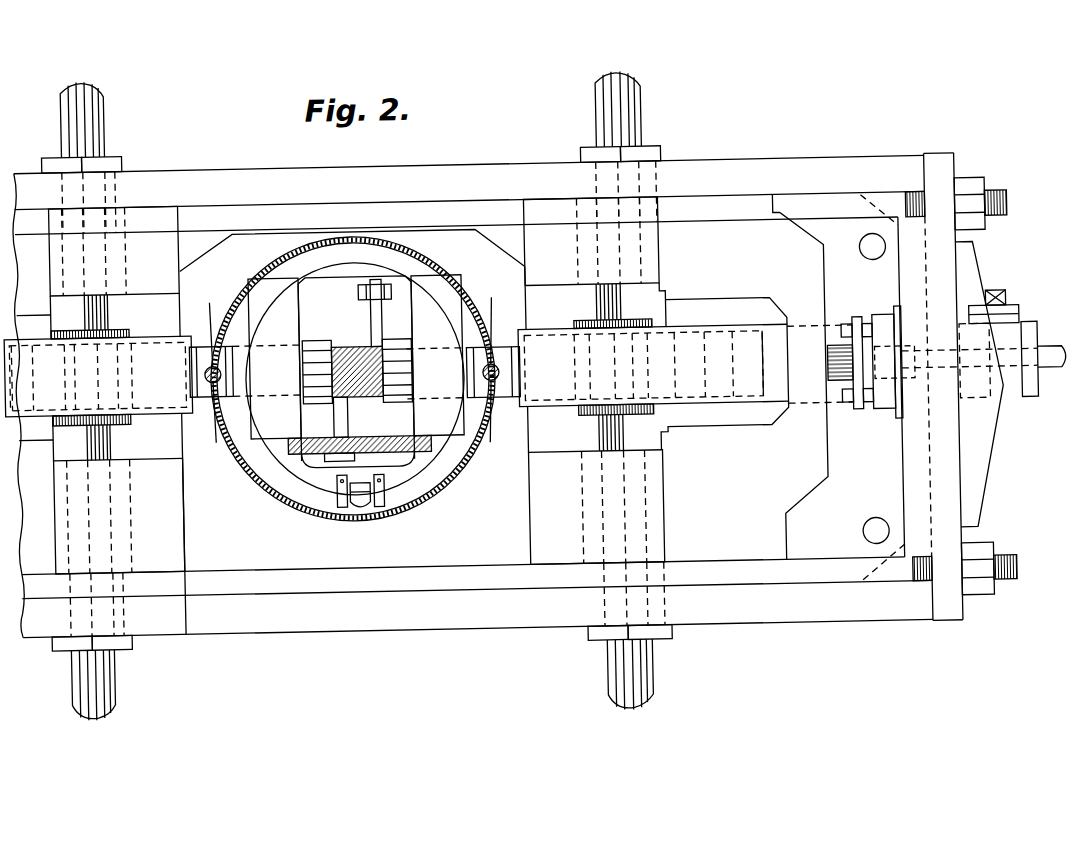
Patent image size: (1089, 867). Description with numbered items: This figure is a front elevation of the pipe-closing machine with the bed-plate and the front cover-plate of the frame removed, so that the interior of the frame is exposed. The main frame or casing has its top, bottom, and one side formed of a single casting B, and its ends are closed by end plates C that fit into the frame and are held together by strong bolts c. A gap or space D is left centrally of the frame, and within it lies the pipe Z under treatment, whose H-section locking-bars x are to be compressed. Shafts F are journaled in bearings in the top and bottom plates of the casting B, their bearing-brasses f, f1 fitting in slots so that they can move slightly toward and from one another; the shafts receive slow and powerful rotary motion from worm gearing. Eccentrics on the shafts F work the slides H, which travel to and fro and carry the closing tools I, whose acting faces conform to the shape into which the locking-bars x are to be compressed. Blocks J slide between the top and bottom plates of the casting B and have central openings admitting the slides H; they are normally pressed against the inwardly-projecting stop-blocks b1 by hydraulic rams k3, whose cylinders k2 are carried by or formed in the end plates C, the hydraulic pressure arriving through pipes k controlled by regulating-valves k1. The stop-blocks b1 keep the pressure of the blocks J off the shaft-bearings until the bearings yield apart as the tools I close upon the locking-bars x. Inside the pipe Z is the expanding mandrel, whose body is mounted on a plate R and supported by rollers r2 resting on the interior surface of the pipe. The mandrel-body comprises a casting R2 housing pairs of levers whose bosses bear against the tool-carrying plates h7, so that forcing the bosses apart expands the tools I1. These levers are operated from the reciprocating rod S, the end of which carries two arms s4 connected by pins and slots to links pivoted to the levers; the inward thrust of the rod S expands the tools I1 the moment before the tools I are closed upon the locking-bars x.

The casting B is at (791, 186).
The bolts c is at (1012, 609).
The end plates C is at (949, 184).
The shafts F is at (107, 123).
The bearing-brass f is at (63, 160).
The bearing-brass f1 is at (116, 161).
The stop-blocks b1 is at (357, 385).
The blocks J is at (461, 415).
The slides H is at (428, 371).
The gap or space D is at (352, 260).
The pipe Z is at (274, 498).
The casting R2 is at (356, 357).
The reciprocating rod S is at (350, 355).
The arms s4 is at (380, 318).
The plate R is at (430, 450).
The rollers r2 is at (361, 512).
The closing tools I is at (203, 352).
The tools I1 is at (483, 390).
The tool-carrying plates h7 is at (243, 392).
The locking-bars x is at (220, 366).
The pipes k is at (1061, 370).
The regulating-valves k1 is at (1003, 313).
The cylinders k2 is at (889, 331).
The hydraulic rams k3 is at (833, 393).